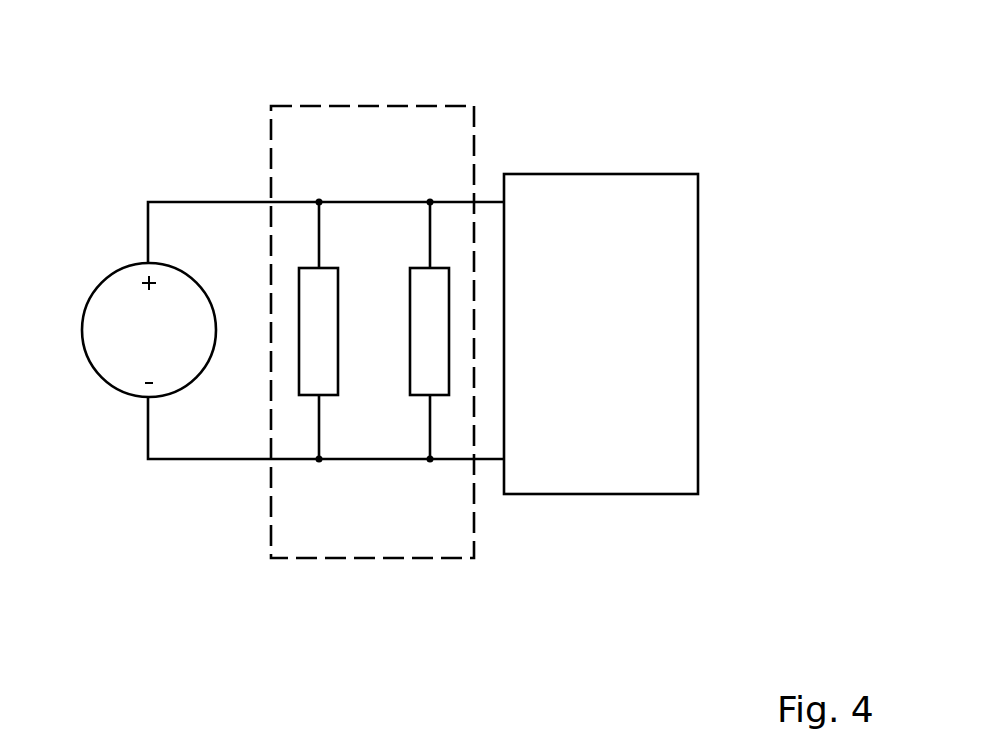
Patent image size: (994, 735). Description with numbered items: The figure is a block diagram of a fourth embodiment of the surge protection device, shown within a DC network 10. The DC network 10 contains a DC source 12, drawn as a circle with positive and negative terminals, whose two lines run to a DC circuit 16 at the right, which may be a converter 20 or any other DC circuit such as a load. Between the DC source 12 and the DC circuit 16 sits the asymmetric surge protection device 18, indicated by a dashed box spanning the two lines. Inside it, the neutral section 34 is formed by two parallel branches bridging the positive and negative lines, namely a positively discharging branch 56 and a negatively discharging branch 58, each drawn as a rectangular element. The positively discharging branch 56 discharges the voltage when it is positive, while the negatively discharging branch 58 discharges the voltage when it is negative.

The DC network 10 is at (430, 360).
The DC source 12 is at (117, 392).
The DC circuit 16 is at (666, 266).
The converter 20 is at (645, 174).
The asymmetric surge protection device 18 is at (413, 360).
The neutral section 34 is at (364, 441).
The positively discharging branch 56 is at (309, 397).
The negatively discharging branch 58 is at (419, 397).